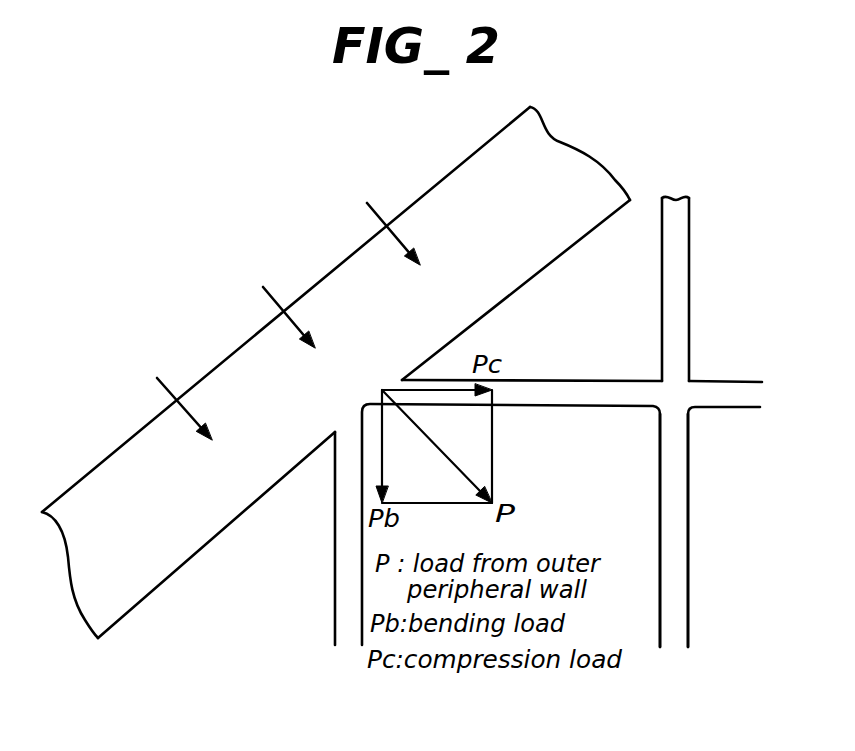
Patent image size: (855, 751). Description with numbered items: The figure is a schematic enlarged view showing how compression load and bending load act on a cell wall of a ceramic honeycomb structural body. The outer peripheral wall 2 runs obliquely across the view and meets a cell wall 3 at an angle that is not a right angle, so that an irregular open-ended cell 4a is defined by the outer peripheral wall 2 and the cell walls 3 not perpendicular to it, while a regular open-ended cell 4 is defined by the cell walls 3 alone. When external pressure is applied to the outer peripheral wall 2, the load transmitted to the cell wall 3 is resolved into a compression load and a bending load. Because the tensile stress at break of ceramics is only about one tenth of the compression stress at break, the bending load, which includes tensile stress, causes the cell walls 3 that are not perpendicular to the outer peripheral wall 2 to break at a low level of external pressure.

The outer peripheral wall 2 is at (124, 445).
The cell wall 3 is at (677, 526).
The open-ended cell 4 is at (588, 448).
The irregular open-ended cell 4a is at (617, 282).